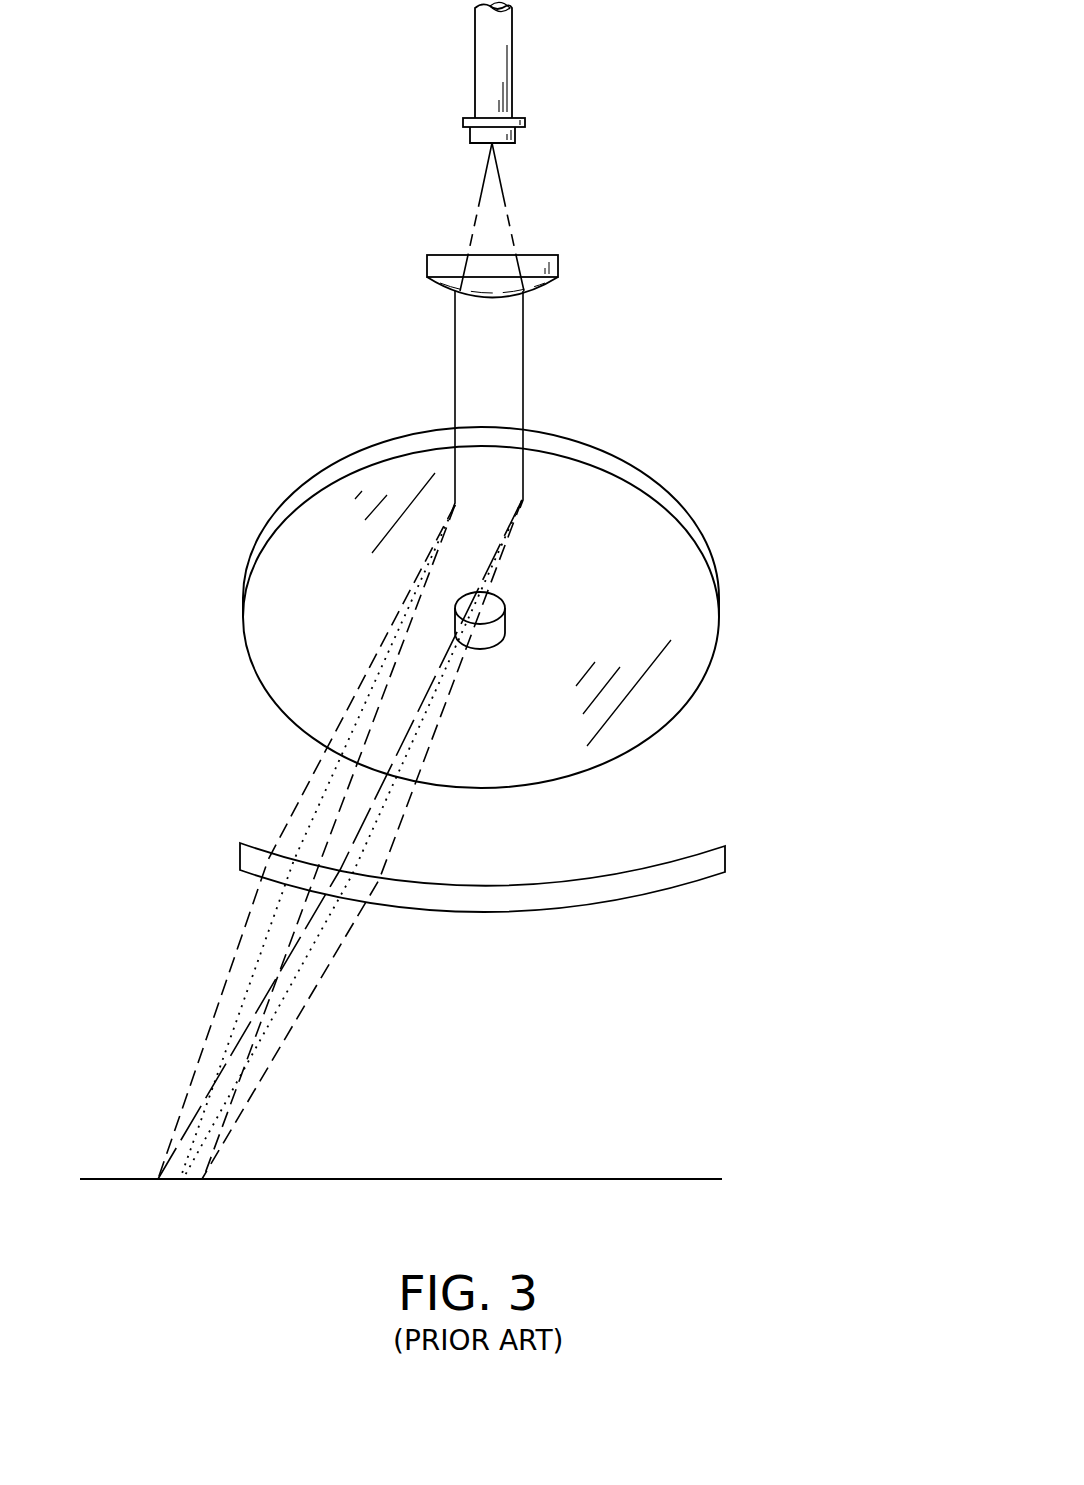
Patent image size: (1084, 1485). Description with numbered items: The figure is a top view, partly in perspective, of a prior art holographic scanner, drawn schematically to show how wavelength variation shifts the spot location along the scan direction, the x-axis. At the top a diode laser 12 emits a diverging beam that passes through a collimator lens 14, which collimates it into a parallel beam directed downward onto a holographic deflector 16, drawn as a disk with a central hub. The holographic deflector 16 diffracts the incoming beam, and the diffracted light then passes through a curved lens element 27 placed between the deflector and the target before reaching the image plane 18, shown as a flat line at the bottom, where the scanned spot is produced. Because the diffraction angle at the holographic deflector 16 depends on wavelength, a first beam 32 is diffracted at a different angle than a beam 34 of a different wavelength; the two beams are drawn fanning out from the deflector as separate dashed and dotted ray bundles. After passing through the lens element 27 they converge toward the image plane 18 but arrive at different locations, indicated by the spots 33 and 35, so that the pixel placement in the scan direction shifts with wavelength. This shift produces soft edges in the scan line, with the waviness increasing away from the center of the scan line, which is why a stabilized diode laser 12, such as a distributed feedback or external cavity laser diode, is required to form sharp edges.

The diode laser 12 is at (513, 60).
The collimator lens 14 is at (558, 268).
The holographic deflector 16 is at (623, 462).
The image plane 18 is at (632, 1178).
The focusing lens 27 is at (725, 860).
The first beam 32 is at (393, 622).
The focal spot 33 is at (148, 1173).
The beam 34 is at (375, 684).
The focal spot 35 is at (203, 1177).